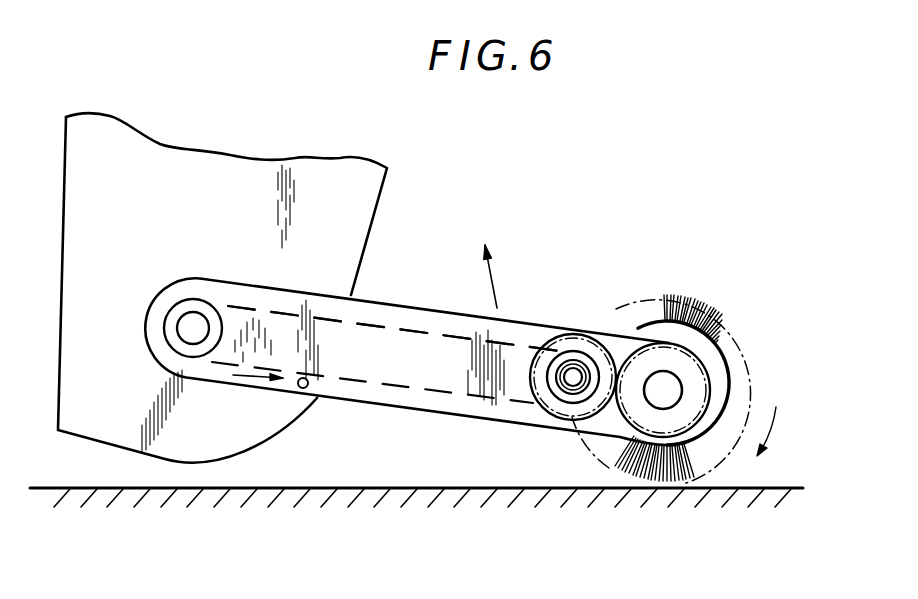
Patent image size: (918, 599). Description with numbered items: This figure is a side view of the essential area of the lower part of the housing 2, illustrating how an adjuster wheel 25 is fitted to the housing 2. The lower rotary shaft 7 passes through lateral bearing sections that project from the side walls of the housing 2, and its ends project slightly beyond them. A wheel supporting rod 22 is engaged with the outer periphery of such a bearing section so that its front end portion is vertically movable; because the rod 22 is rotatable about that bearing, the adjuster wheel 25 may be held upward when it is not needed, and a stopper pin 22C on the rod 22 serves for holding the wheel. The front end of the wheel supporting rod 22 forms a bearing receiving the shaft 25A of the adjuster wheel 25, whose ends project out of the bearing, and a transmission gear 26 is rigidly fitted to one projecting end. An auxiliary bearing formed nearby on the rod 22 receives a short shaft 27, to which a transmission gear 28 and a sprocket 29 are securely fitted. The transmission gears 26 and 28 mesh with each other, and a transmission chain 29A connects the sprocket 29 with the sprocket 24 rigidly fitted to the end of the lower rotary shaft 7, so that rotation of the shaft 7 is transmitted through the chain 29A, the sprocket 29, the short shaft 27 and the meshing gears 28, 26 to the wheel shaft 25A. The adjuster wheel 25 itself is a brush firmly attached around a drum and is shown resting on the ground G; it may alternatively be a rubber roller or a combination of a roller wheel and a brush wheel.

The housing 2 is at (172, 146).
The rotary shaft 7 is at (194, 322).
The sprocket 24 is at (222, 307).
The wheel supporting rod 22 is at (381, 299).
The transmission chain 29A is at (410, 327).
The stopper pin 22C is at (303, 388).
The transmission gear 28 is at (585, 334).
The sprocket 29 is at (573, 351).
The short shaft 27 is at (571, 382).
The transmission gear 26 is at (683, 342).
The shaft of the adjuster wheel 25A is at (670, 390).
The adjuster wheel 25 is at (734, 325).
The ground G is at (775, 487).